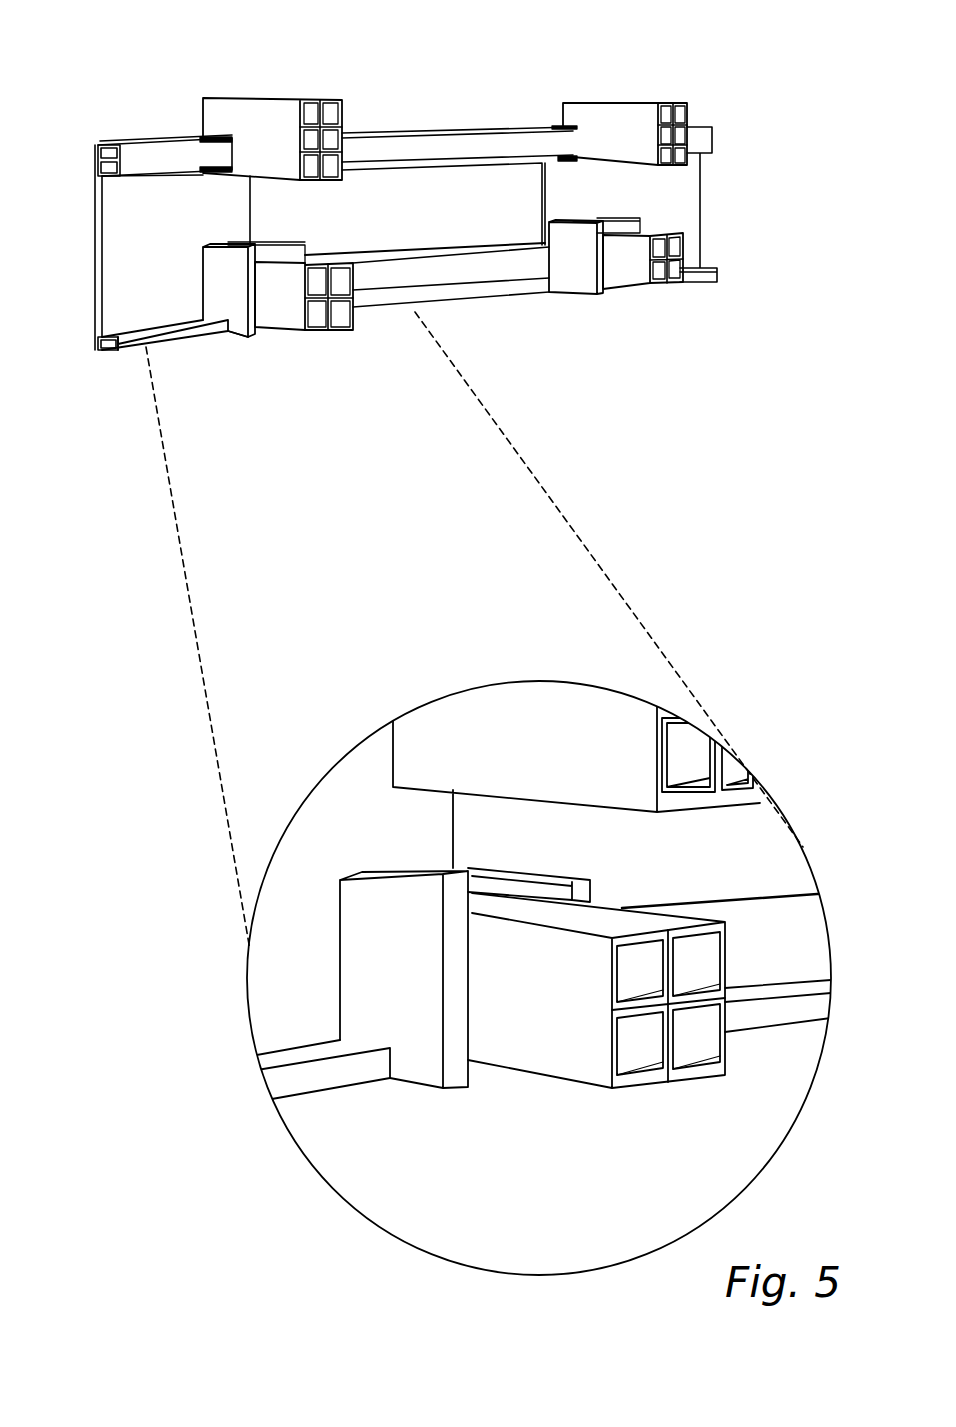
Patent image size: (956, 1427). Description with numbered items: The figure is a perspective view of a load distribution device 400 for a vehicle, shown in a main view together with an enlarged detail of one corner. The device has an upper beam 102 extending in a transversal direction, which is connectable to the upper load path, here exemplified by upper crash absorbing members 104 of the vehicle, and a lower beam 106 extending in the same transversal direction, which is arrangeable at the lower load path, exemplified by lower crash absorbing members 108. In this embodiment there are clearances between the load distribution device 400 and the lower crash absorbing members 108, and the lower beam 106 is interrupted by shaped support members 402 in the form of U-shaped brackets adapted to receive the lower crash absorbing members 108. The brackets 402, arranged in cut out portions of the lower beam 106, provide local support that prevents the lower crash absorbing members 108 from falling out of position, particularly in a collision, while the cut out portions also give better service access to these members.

The load distribution device 400 is at (484, 112).
The upper beam 102 is at (107, 143).
The upper crash absorbing member 104 is at (290, 118).
The lower beam 106 is at (120, 350).
The lower crash absorbing member 108 is at (290, 313).
The shaped support member 402 is at (567, 252).